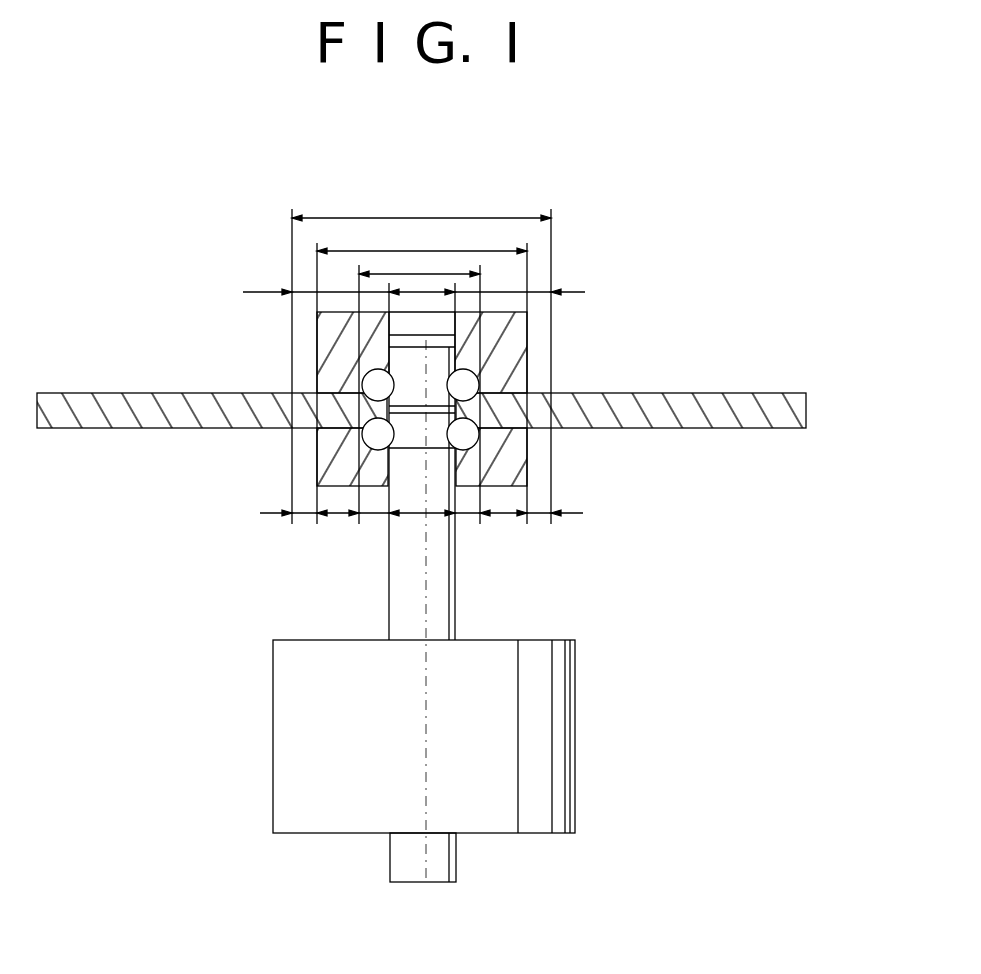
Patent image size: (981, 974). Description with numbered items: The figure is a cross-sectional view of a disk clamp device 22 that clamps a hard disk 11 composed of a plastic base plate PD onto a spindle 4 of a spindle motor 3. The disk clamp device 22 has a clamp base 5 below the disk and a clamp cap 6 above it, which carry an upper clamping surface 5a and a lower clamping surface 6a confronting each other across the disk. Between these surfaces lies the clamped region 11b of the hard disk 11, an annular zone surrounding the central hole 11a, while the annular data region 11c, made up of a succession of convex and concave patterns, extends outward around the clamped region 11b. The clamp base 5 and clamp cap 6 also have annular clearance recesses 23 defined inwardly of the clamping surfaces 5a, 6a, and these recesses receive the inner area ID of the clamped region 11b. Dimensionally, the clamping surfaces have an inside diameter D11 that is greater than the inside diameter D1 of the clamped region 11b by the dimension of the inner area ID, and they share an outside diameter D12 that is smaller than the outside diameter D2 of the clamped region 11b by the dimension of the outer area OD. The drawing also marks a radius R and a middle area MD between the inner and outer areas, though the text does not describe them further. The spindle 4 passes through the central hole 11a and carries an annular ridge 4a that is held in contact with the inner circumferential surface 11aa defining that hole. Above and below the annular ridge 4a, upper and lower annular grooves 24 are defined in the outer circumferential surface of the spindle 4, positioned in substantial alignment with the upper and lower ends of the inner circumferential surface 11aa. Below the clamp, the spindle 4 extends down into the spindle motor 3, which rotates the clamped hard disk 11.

The spindle motor 3 is at (563, 740).
The spindle 4 is at (447, 615).
The annular ridge 4a is at (458, 408).
The clamp base 5 is at (510, 474).
The upper clamping surface 5a is at (330, 428).
The clamp cap 6 is at (517, 333).
The lower clamping surface 6a is at (318, 394).
The hard disk 11 is at (750, 402).
The central hole 11a is at (530, 395).
The inner circumferential surface 11aa is at (300, 430).
The clamped region 11b is at (480, 430).
The data region 11c is at (770, 417).
The disk clamp device 22 is at (612, 280).
The annular clearance recesses 23 is at (365, 380).
The upper and lower annular grooves 24 is at (443, 368).
The plastic base plate PD is at (807, 392).
The inside diameter of the clamped region D1 is at (432, 292).
The inside diameter of the clamping surfaces D11 is at (418, 272).
The outside diameter of the clamping surfaces D12 is at (395, 250).
The outside diameter of the clamped region D2 is at (353, 217).
The radius R is at (330, 292).
The outer area of the clamped region OD is at (307, 517).
The middle diameter region MD is at (337, 517).
The inner area of the clamped region ID is at (373, 518).